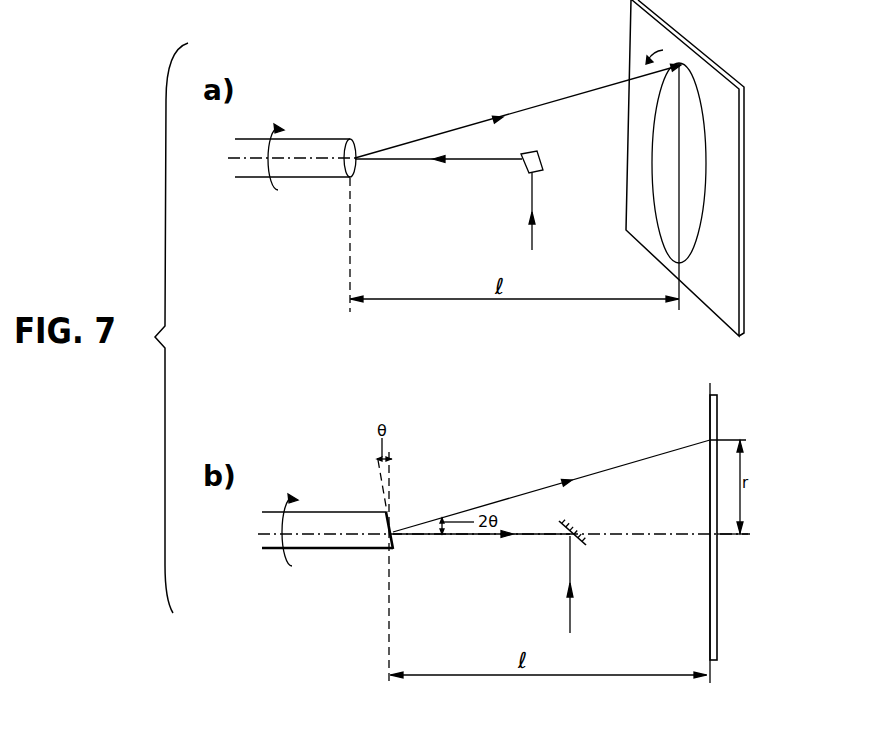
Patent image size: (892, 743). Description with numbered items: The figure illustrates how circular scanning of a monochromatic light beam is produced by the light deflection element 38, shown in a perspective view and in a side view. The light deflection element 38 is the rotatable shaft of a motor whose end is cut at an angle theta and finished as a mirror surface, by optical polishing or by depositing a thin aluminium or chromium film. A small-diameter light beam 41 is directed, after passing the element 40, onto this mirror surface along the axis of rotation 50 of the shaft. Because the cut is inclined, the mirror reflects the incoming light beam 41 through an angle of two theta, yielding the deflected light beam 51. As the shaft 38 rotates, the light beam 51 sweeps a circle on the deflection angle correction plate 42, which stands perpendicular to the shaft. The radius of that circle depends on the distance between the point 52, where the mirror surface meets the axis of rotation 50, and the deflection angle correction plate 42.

The light deflection element 38 is at (311, 144).
The axis of rotation 50 is at (311, 162).
The point 52 is at (353, 142).
The light beam 51 is at (533, 107).
The light beam 41 is at (477, 163).
The beam-deflecting mirror 40 is at (543, 170).
The deflection angle correction plate 42 is at (710, 78).